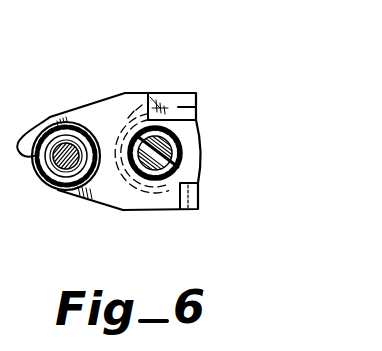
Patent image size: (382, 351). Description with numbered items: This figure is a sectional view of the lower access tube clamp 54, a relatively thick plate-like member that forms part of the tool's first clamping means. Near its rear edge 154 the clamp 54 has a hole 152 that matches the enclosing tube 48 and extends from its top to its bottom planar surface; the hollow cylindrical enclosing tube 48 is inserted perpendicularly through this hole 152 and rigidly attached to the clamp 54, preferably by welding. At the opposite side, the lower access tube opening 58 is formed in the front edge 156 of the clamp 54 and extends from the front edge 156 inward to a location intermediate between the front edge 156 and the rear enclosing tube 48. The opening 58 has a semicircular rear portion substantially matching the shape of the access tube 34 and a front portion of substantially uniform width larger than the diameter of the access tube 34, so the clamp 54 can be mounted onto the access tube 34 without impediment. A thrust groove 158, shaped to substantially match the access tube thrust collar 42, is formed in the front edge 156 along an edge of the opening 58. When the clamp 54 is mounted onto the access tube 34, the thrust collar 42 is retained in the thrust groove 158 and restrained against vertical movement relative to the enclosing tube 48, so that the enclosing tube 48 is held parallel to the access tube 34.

The access tube 34 is at (178, 167).
The access tube thrust collar 42 is at (195, 148).
The enclosing tube 48 is at (112, 209).
The lower access tube clamp 54 is at (50, 117).
The lower access tube opening 58 is at (186, 209).
The hole 152 is at (58, 190).
The rear edge 154 is at (19, 135).
The front edge 156 is at (200, 97).
The thrust groove 158 is at (150, 97).